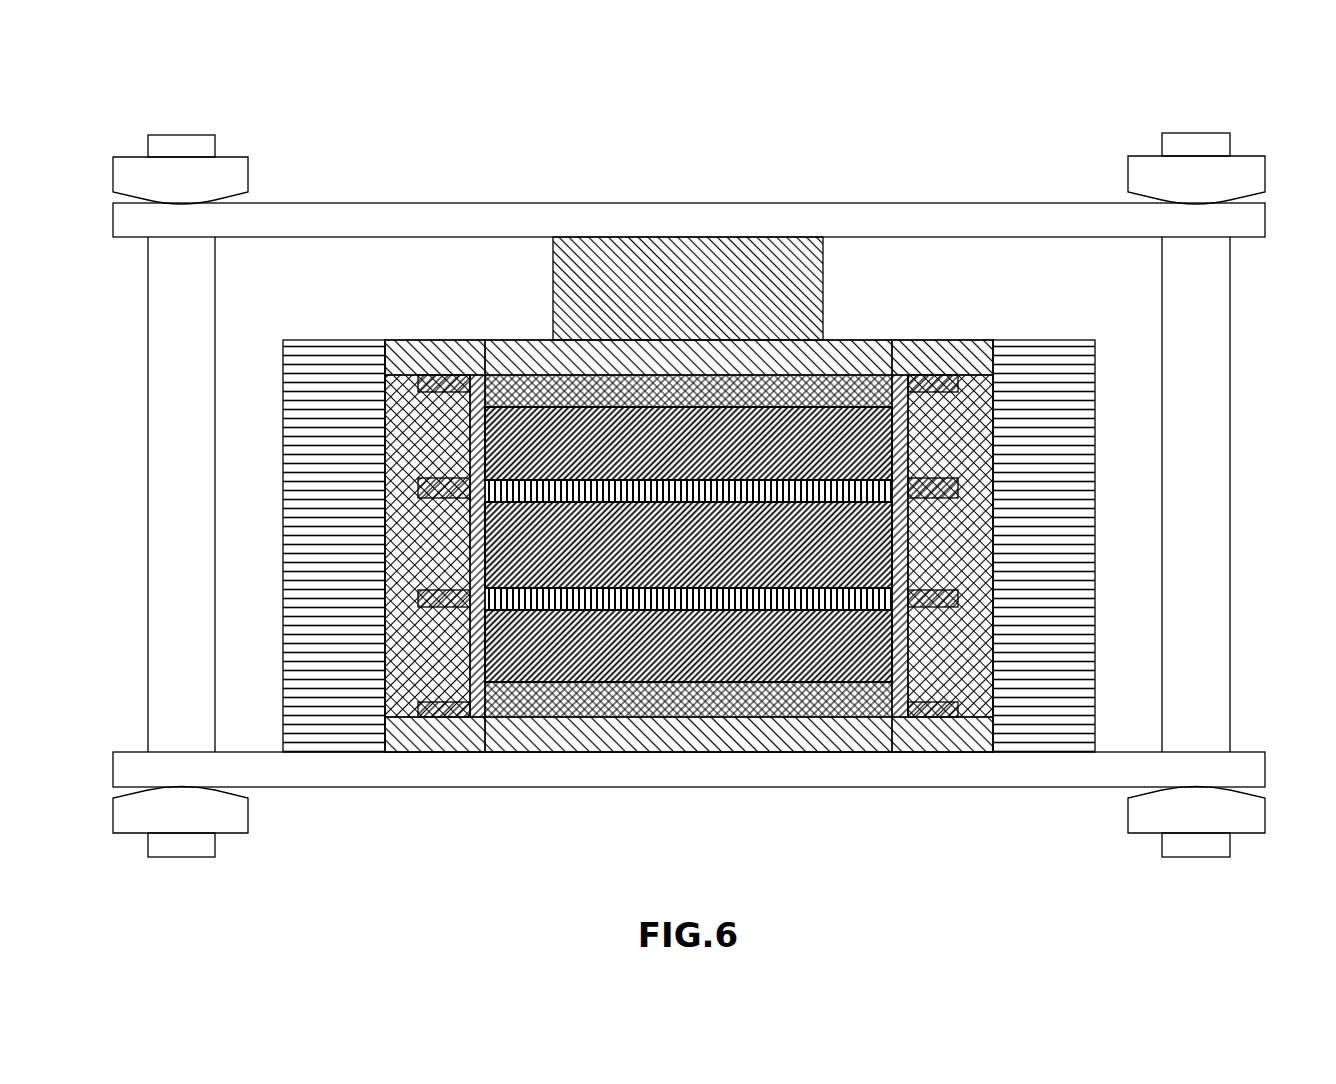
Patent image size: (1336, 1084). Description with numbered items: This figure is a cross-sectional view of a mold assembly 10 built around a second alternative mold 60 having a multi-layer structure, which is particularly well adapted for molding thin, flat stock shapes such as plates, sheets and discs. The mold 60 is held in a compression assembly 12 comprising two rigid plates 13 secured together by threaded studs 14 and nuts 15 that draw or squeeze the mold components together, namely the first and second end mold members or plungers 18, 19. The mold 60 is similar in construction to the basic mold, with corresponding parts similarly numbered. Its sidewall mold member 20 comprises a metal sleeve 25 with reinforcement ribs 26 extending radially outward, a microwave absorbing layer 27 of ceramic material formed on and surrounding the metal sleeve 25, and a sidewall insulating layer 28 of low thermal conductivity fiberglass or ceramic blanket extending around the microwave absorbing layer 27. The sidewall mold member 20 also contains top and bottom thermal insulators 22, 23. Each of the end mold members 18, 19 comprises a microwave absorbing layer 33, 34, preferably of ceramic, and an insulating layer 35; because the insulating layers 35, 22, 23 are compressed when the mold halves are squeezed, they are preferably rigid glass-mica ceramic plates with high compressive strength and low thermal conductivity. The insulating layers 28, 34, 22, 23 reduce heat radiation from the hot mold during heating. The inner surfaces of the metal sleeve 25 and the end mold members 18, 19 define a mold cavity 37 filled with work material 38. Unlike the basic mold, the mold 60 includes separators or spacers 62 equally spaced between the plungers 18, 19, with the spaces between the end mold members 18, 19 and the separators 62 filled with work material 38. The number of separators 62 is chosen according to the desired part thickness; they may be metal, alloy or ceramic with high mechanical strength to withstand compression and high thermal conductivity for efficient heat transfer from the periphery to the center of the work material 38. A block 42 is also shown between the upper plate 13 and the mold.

The mold assembly 10 is at (645, 172).
The compression assembly 12 is at (1080, 183).
The rigid plates 13 is at (803, 215).
The threaded studs 14 is at (1228, 445).
The nuts 15 is at (140, 175).
The first end mold member 18 is at (522, 335).
The second end mold member 19 is at (570, 757).
The sidewall mold member 20 is at (390, 320).
The top thermal insulator 22 is at (417, 358).
The bottom thermal insulator 23 is at (428, 733).
The metal sleeve 25 is at (478, 445).
The reinforcement ribs 26 is at (443, 385).
The microwave absorbing layer 27 is at (952, 445).
The sidewall insulating layer 28 is at (335, 693).
The microwave absorbing layer 33 is at (832, 397).
The microwave absorbing layer 34 is at (639, 698).
The insulating layer 35 is at (867, 360).
The mold cavity 37 is at (668, 673).
The work material 38 is at (742, 660).
The load block 42 is at (697, 275).
The mold 60 is at (347, 320).
The separators 62 is at (755, 600).